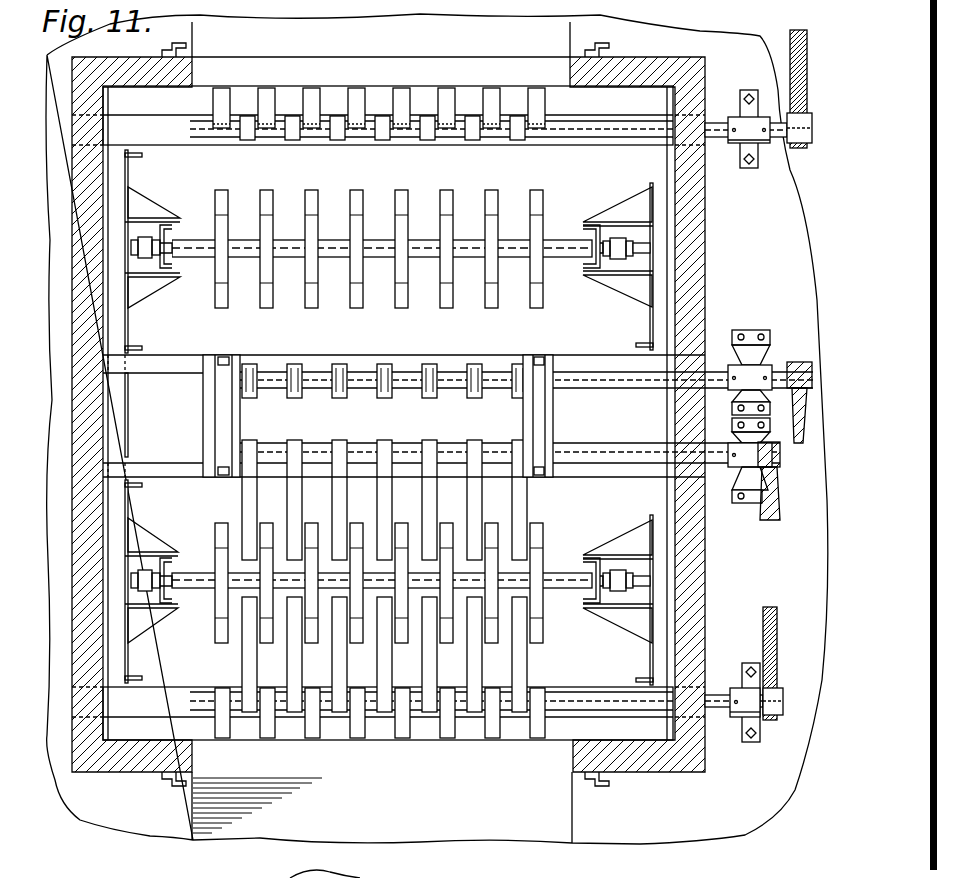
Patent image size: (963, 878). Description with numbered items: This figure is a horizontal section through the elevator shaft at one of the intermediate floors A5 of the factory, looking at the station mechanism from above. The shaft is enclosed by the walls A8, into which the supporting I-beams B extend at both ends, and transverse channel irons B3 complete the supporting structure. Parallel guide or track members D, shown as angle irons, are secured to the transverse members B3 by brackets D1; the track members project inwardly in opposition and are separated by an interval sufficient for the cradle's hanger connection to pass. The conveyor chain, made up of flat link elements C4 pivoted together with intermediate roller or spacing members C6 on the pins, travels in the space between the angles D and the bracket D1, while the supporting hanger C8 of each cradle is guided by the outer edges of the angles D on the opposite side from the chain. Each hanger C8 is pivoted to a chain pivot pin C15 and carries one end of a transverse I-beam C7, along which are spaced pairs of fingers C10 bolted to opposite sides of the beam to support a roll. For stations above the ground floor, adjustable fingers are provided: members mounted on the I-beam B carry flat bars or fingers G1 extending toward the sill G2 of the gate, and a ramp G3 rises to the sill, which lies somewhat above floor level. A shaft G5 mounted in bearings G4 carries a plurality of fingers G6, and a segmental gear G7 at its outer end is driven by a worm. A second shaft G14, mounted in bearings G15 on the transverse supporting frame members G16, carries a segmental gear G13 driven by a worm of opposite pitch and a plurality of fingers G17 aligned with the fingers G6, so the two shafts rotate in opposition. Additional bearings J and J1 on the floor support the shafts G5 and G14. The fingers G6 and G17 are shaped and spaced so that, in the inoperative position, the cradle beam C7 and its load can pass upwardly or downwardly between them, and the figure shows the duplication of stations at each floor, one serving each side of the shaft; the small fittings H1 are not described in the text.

The intermediate floor A5 is at (765, 812).
The walls of the elevator shaft A8 is at (705, 210).
The I-beams B is at (103, 422).
The transverse channel irons B3 is at (590, 118).
The flat bars or fingers G1 is at (312, 95).
The sill G2 is at (372, 72).
The ramp G3 is at (572, 40).
The bearings G4 is at (215, 128).
The shaft G5 is at (715, 124).
The fingers G6 is at (337, 141).
The segmental gear G7 is at (792, 42).
The segmental gear G13 is at (779, 482).
The shaft G14 is at (637, 410).
The bearings G15 is at (220, 447).
The transverse supporting frame members G16 is at (143, 395).
The fingers G17 is at (470, 398).
The bracket H1 is at (187, 46).
The additional bearings J is at (752, 148).
The additional bearings J1 is at (751, 366).
The flat link elements C4 is at (152, 260).
The roller or spacing members C6 is at (144, 260).
The transverse I-beam C7 is at (378, 242).
The supporting hanger C8 is at (174, 232).
The fingers C10 is at (533, 197).
The chain pivot pins C15 is at (640, 245).
The guide or track members D is at (160, 218).
The brackets D1 is at (147, 208).